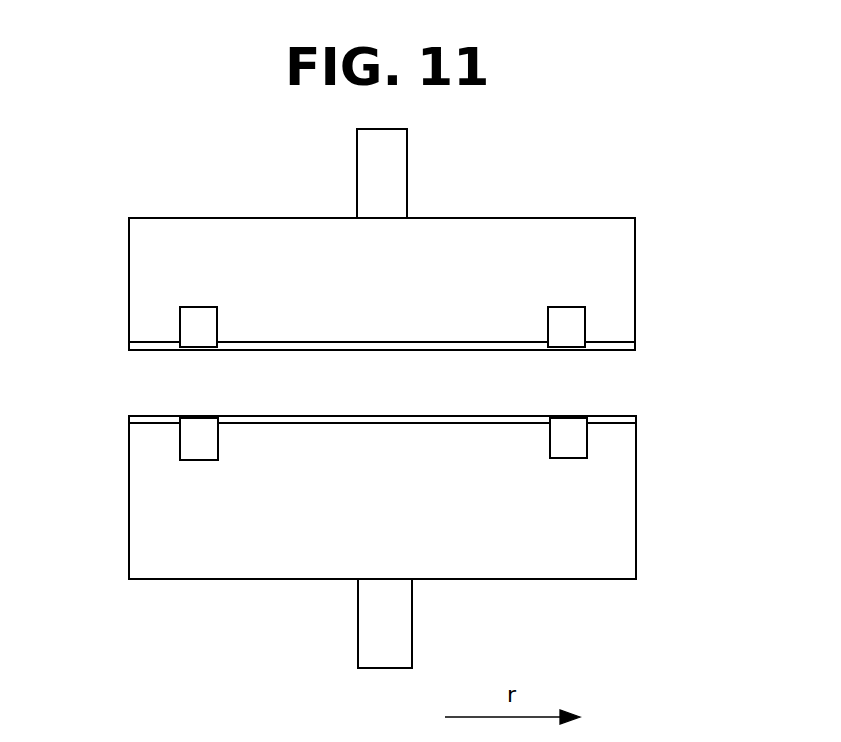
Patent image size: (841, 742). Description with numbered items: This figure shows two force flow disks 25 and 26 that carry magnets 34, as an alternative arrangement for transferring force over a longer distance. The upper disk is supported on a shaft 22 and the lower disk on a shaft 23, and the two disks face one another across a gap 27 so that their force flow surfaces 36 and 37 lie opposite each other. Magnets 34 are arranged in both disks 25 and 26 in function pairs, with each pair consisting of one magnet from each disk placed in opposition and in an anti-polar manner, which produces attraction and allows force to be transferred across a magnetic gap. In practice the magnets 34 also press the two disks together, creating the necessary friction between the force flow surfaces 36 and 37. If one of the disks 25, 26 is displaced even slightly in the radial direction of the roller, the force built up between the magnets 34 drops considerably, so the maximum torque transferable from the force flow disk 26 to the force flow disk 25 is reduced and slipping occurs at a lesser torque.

The upper shaft 22 is at (373, 162).
The lower shaft 23 is at (373, 633).
The force flow disk 25 is at (421, 298).
The force flow disk 26 is at (488, 533).
The gap 27 is at (178, 403).
The magnets 34 is at (178, 322).
The force flow surface 36 is at (288, 425).
The force flow surface 37 is at (302, 342).